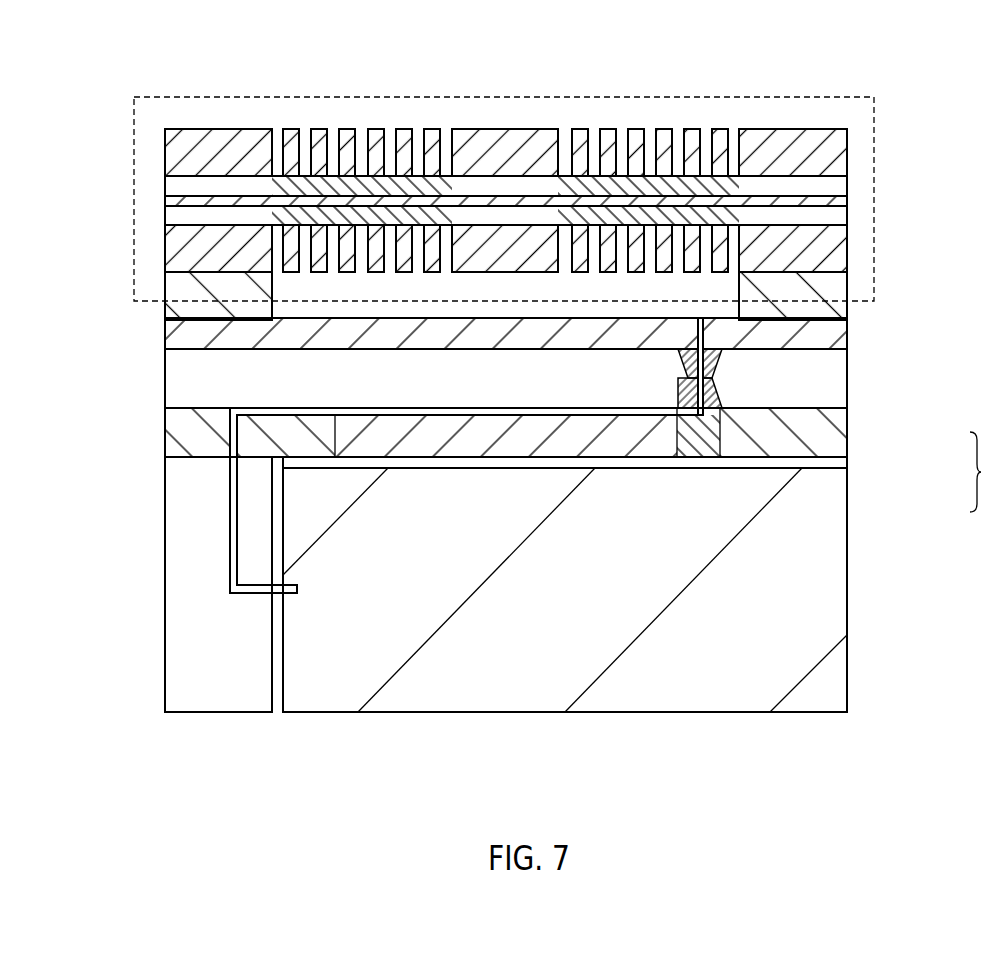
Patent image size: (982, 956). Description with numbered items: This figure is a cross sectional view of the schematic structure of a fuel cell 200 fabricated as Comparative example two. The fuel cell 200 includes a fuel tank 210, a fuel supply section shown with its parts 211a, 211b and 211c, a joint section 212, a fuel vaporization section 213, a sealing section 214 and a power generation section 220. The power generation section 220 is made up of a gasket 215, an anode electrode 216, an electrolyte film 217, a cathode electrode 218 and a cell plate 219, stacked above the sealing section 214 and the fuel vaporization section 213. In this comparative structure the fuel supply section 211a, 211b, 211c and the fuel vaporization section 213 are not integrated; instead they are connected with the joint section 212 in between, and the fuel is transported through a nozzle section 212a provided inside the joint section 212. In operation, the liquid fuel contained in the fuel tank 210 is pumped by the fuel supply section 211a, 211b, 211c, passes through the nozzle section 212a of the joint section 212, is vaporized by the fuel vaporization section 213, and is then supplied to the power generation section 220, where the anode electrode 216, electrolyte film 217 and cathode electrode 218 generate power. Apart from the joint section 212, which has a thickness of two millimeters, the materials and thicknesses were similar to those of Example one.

The fuel cell 200 is at (860, 752).
The fuel tank 210 is at (832, 572).
The first insulating layer 211a is at (760, 457).
The second insulating layer 211b is at (828, 440).
The wiring electrode 211c is at (237, 498).
The joint section 212 is at (722, 390).
The nozzle section 212a is at (722, 360).
The fuel vaporization section 213 is at (833, 332).
The sealing section 214 is at (177, 288).
The gasket 215 is at (820, 250).
The anode electrode 216 is at (278, 211).
The electrolyte film 217 is at (745, 203).
The cathode electrode 218 is at (280, 182).
The cell plate 219 is at (176, 156).
The power generation section 220 is at (503, 97).